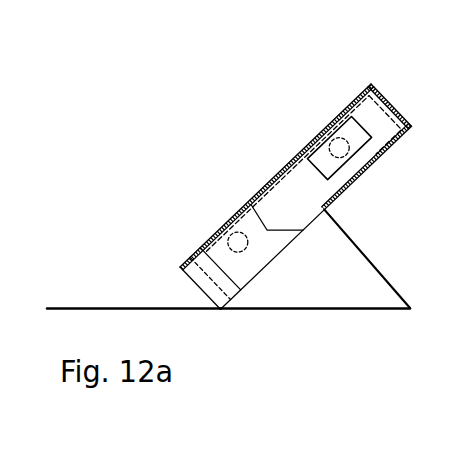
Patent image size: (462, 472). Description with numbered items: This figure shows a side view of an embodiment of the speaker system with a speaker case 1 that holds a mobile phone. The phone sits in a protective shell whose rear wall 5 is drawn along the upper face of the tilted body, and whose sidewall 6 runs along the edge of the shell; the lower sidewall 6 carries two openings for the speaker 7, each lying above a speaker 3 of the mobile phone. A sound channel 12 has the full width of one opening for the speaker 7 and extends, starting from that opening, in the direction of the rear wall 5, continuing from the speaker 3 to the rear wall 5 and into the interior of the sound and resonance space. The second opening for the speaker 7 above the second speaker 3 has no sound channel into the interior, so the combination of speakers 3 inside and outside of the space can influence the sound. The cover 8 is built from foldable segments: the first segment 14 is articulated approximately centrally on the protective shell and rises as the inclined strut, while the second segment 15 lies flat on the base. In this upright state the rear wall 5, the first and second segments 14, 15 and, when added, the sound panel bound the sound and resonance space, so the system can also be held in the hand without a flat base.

The speaker case 1 is at (176, 133).
The speaker 3 is at (329, 137).
The rear wall 5 is at (396, 152).
The sidewall 6 is at (380, 120).
The opening for the speaker 7 is at (347, 128).
The cover 8 is at (108, 308).
The sound channel 12 is at (258, 258).
The first segment 14 is at (400, 290).
The second segment 15 is at (310, 310).